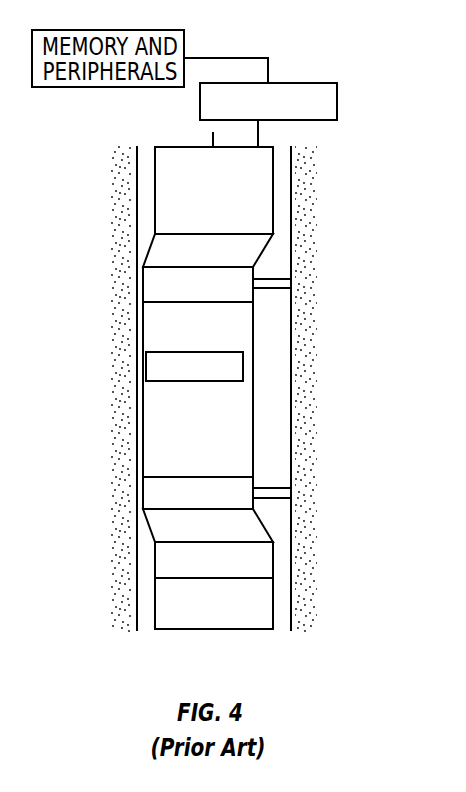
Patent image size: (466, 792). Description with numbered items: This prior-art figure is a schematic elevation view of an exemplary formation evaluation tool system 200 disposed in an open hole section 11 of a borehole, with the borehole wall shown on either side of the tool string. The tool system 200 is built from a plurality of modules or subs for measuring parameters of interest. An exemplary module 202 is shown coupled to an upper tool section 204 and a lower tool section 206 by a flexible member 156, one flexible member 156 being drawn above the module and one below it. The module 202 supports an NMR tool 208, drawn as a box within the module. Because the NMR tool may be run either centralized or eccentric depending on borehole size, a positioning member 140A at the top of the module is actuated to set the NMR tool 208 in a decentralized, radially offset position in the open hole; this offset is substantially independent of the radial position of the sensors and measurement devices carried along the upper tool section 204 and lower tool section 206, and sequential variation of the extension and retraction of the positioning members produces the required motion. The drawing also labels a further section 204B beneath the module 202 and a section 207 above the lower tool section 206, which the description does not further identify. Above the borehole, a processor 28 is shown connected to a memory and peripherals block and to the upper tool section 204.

The processor 28 is at (275, 80).
The open hole section 11 is at (326, 389).
The upper tool section 204 is at (232, 204).
The flexible member 156 is at (183, 263).
The positioning member 140A is at (183, 297).
The module 202 is at (177, 457).
The NMR tool 208 is at (177, 377).
The formation evaluation tool system 200 is at (314, 370).
The lower sub 204B is at (177, 504).
The power section 207 is at (197, 574).
The lower tool section 206 is at (197, 616).